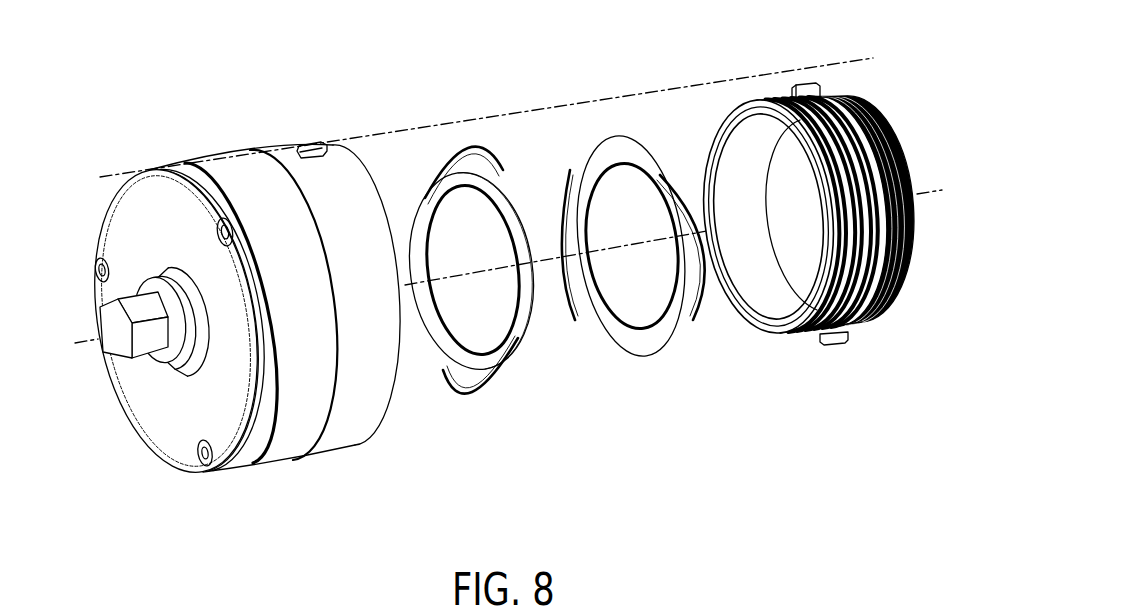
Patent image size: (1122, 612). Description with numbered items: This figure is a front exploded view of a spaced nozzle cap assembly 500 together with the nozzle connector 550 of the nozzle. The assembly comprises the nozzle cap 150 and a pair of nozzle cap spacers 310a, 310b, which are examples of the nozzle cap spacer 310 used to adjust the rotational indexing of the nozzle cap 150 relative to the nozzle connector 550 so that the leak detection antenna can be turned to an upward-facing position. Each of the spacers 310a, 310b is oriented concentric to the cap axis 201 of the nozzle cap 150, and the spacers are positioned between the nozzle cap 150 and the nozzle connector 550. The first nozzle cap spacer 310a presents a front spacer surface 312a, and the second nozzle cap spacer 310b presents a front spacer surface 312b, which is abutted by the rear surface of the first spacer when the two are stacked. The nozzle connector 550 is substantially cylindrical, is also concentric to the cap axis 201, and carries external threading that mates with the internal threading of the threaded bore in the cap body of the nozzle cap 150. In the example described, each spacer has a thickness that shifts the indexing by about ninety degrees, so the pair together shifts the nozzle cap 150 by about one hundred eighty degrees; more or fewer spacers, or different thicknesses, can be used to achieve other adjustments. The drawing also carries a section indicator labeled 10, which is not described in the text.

The section line indicator 10 is at (100, 177).
The nozzle cap 150 is at (110, 480).
The cap axis 201 is at (917, 192).
The nozzle cap spacer 310 is at (566, 216).
The first nozzle cap spacer 310a is at (499, 225).
The second nozzle cap spacer 310b is at (649, 207).
The front spacer surface 312a is at (527, 311).
The front spacer surface 312b is at (650, 252).
The spaced nozzle cap assembly 500 is at (397, 297).
The nozzle connector 550 is at (824, 172).